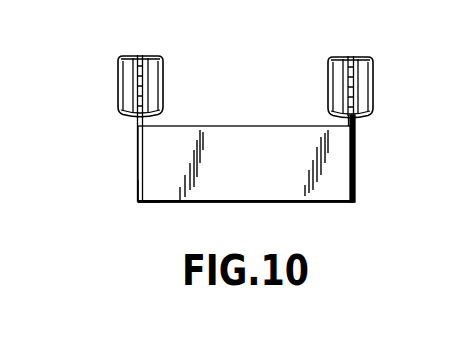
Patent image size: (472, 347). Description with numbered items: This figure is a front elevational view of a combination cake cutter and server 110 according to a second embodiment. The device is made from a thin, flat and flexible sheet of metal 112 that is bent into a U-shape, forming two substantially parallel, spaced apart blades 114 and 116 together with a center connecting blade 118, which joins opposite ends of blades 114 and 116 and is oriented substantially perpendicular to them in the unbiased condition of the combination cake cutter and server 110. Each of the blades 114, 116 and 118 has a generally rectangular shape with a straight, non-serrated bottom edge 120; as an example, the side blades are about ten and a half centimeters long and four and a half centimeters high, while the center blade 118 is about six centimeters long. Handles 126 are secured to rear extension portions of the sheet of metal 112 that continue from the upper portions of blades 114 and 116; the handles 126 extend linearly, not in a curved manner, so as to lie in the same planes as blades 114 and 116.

The combination cake cutter and server 110 is at (108, 38).
The thin, flat and flexible sheet of metal 112 is at (124, 215).
The blade 114 is at (138, 162).
The blade 116 is at (356, 156).
The center connecting blade 118 is at (196, 127).
The bottom edge 120 is at (320, 203).
The handles 126 is at (118, 80).